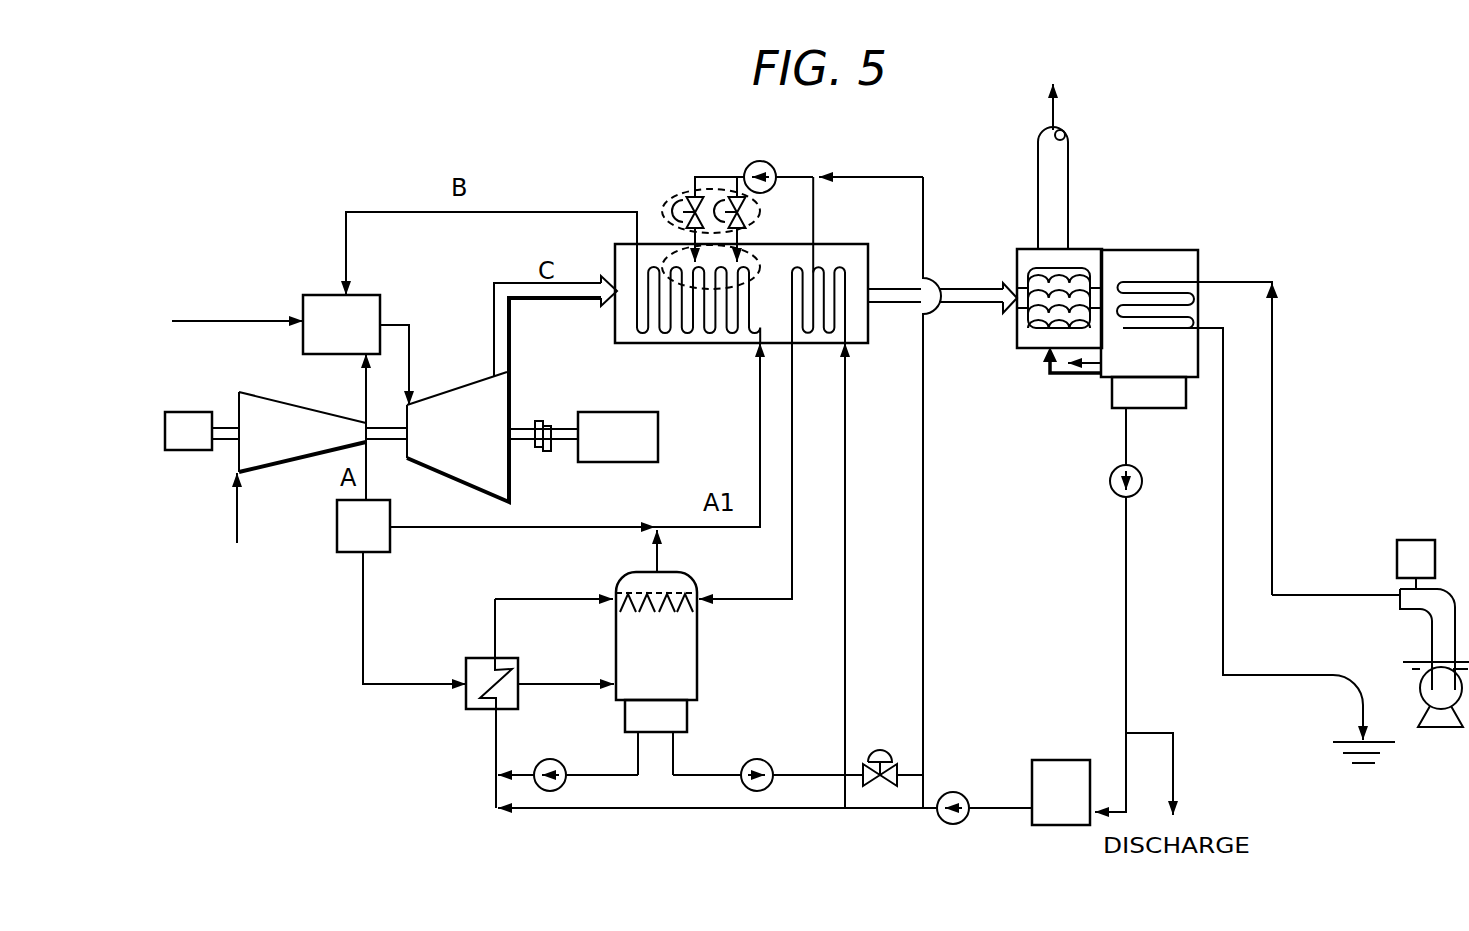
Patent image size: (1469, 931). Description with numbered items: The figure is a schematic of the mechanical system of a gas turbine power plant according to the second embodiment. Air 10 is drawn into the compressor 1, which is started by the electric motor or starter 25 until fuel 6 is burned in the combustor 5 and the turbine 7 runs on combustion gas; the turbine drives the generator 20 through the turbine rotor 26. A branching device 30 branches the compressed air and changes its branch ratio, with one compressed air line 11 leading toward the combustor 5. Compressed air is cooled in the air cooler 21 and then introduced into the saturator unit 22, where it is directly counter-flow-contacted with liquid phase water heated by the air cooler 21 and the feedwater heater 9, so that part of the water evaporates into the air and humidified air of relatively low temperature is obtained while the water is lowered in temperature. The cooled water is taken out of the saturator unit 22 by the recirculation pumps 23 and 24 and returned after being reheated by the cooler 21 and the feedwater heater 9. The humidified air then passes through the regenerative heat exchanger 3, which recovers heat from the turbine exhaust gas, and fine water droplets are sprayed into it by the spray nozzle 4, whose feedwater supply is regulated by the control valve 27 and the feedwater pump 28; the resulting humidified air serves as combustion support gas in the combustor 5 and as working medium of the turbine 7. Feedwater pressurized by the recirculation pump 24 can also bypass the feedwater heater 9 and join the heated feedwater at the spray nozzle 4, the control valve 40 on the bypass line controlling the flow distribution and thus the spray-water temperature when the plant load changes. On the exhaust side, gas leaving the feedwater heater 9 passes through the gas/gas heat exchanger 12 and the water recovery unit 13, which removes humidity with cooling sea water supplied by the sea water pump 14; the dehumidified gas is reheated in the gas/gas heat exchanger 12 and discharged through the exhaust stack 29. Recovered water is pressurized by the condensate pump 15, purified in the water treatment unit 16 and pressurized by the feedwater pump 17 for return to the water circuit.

The compressor 1 is at (268, 400).
The regenerative heat exchanger 3 is at (661, 342).
The spray nozzle 4 is at (667, 245).
The combustor 5 is at (318, 295).
The fuel 6 is at (222, 321).
The turbine 7 is at (470, 383).
The feedwater heater 9 is at (828, 266).
The air 10 is at (238, 531).
The compressed air line 11 is at (365, 393).
The gas/gas heat exchanger 12 is at (1041, 326).
The water recovery unit 13 is at (1154, 286).
The sea water pump 14 is at (1430, 622).
The condensate pump 15 is at (1111, 480).
The water treatment unit 16 is at (1052, 764).
The feedwater pump 17 is at (958, 792).
The generator 20 is at (589, 412).
The air cooler 21 is at (480, 658).
The saturator unit 22 is at (700, 677).
The recirculation pump 23 is at (560, 759).
The recirculation pump 24 is at (766, 760).
The electric motor or starter 25 is at (176, 418).
The turbine rotor 26 is at (532, 441).
The control valve 27 is at (687, 189).
The feedwater pump 28 is at (769, 163).
The exhaust stack 29 is at (1040, 178).
The branching device 30 is at (347, 552).
The control valve 40 is at (893, 749).